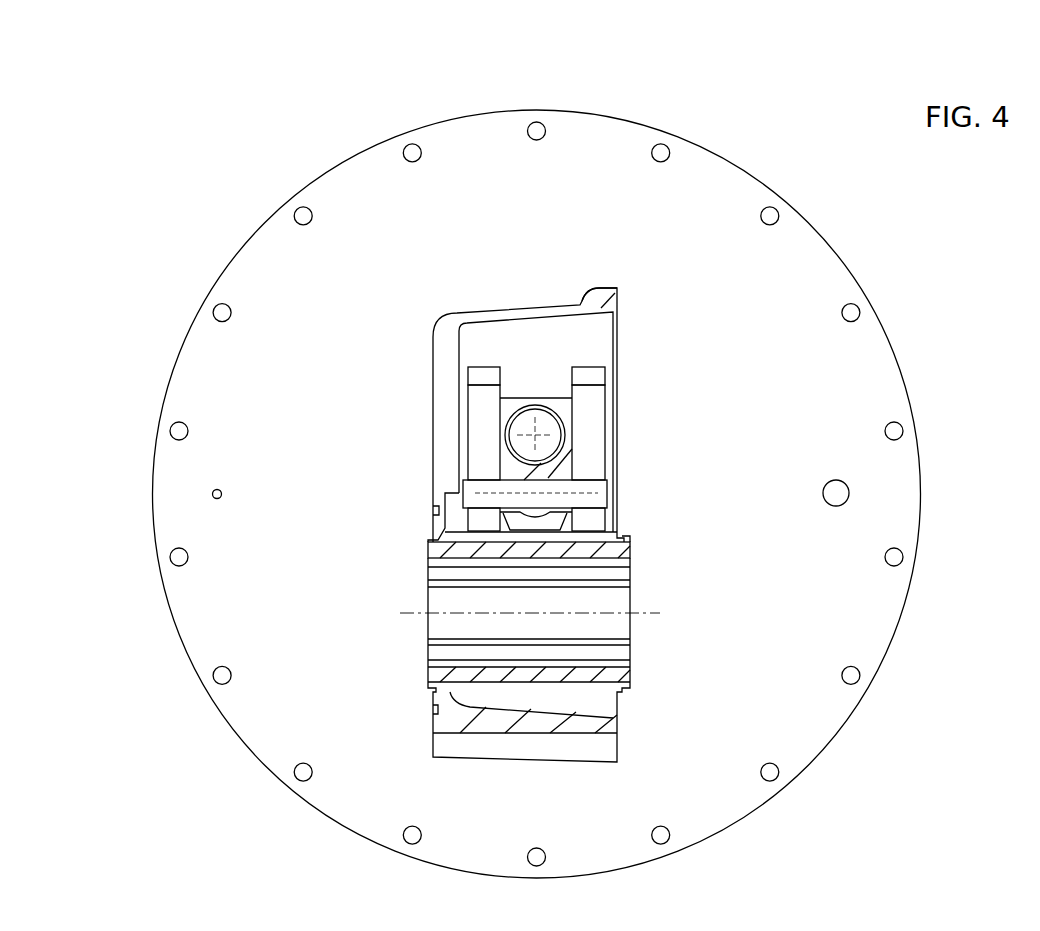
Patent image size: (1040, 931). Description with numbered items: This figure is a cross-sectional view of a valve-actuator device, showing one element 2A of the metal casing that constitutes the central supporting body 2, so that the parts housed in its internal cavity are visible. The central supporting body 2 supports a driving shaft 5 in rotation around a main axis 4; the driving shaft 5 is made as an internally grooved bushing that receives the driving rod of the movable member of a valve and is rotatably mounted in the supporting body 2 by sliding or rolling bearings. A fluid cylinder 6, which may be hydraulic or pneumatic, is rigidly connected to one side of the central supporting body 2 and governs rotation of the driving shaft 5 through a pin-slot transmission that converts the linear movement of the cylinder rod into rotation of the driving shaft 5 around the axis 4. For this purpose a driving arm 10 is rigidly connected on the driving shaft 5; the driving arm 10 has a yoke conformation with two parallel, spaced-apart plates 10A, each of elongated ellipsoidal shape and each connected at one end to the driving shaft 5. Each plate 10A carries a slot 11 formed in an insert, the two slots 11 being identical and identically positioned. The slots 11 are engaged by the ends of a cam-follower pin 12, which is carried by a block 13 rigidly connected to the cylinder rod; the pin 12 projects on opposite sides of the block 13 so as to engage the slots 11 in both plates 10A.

The fluid cylinder 6 is at (537, 455).
The central supporting body 2 is at (514, 372).
The element 2A is at (647, 249).
The plates 10A is at (587, 383).
The driving arm 10 is at (663, 401).
The slot 11 is at (587, 408).
The cam-follower pin 12 is at (455, 468).
The block 13 is at (632, 456).
The driving shaft 5 is at (589, 524).
The main axis 4 is at (575, 655).